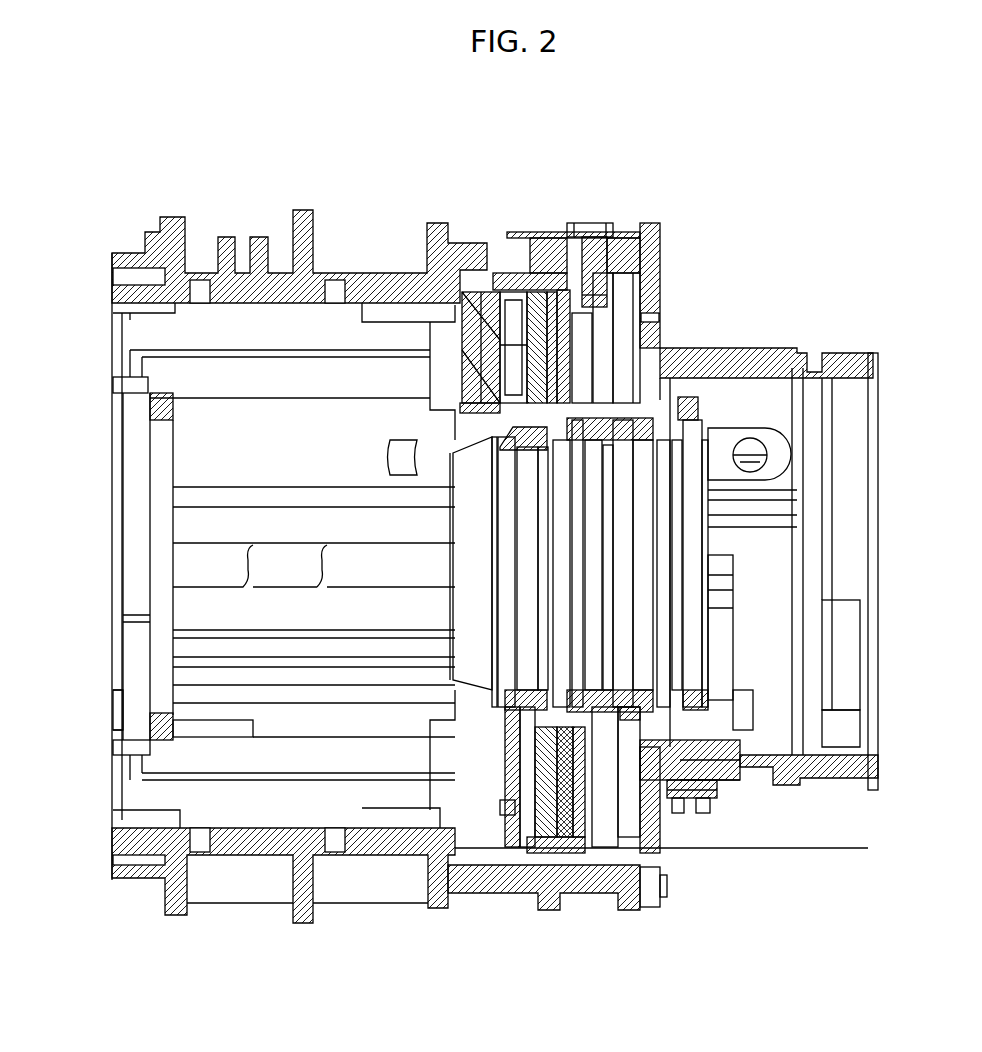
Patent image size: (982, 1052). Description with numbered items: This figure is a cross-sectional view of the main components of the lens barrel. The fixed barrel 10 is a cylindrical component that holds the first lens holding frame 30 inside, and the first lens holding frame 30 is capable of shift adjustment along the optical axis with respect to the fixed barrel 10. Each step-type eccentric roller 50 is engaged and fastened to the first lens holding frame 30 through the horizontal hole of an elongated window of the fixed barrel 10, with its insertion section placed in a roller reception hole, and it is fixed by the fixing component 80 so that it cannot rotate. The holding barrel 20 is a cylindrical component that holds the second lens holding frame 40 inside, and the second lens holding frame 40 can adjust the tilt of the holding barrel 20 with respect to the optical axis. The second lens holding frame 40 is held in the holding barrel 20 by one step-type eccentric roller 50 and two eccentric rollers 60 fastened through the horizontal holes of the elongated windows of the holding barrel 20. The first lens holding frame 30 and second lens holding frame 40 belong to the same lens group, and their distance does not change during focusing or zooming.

The fixed barrel 10 is at (147, 250).
The holding barrel 20 is at (870, 357).
The first lens holding frame 30 is at (645, 272).
The second lens holding frame 40 is at (688, 398).
The step-type eccentric roller 50 is at (596, 223).
The eccentric roller 60 is at (708, 813).
The fixing component 80 is at (522, 233).